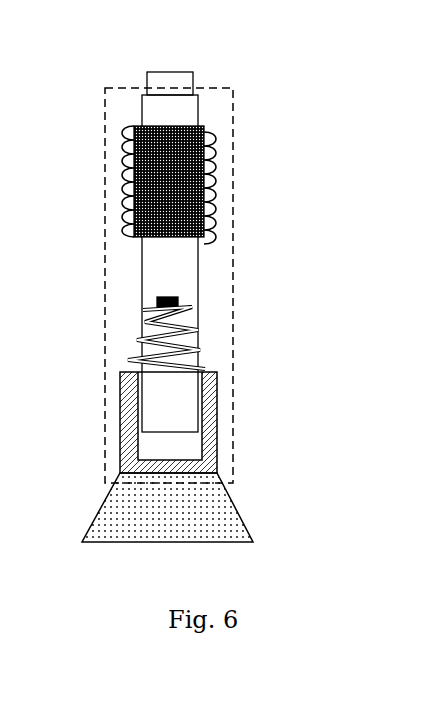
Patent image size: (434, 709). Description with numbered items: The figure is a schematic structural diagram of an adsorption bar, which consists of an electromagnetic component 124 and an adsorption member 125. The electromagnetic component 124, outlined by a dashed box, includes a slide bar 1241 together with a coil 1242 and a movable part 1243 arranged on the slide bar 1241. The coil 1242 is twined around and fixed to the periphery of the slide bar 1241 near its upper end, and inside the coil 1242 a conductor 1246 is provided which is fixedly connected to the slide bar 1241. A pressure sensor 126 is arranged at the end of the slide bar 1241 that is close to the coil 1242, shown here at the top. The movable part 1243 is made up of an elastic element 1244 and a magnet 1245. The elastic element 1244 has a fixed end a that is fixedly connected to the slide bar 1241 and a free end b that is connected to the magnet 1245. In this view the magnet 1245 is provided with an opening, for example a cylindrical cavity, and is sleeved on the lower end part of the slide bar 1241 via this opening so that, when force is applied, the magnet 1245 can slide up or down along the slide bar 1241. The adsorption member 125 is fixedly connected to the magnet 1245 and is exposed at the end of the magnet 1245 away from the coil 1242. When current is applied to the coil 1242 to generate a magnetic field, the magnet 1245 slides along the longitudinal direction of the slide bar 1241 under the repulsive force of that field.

The electromagnetic component 124 is at (208, 88).
The pressure sensor 126 is at (158, 78).
The slide bar 1241 is at (192, 117).
The coil 1242 is at (217, 157).
The conductor 1246 is at (217, 223).
The movable part 1243 is at (226, 390).
The elastic element 1244 is at (200, 348).
The magnet 1245 is at (285, 350).
The adsorption member 125 is at (228, 510).
The fixed end a is at (143, 312).
The free end b is at (114, 358).